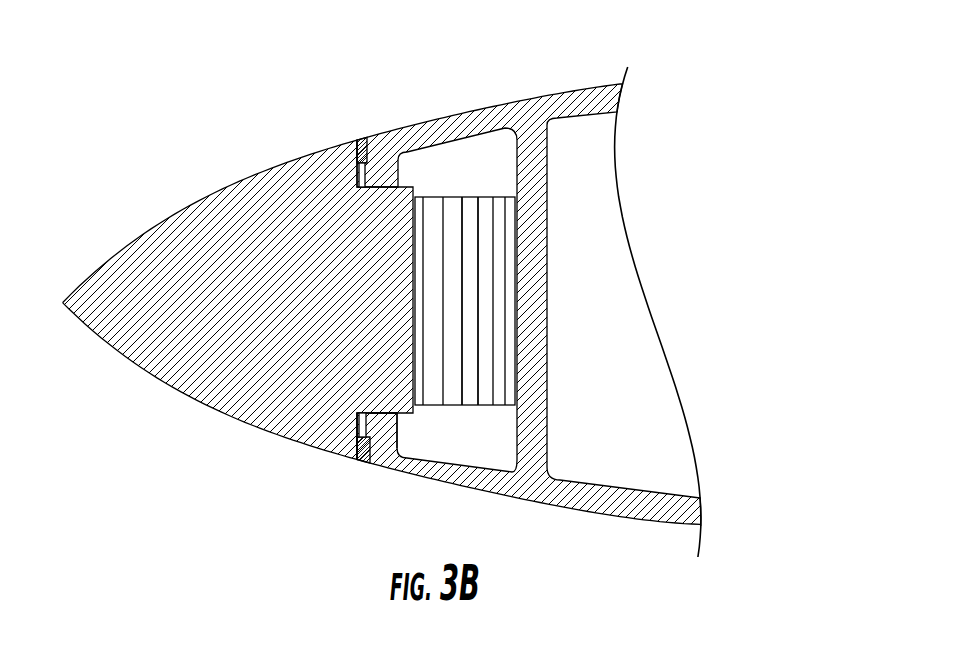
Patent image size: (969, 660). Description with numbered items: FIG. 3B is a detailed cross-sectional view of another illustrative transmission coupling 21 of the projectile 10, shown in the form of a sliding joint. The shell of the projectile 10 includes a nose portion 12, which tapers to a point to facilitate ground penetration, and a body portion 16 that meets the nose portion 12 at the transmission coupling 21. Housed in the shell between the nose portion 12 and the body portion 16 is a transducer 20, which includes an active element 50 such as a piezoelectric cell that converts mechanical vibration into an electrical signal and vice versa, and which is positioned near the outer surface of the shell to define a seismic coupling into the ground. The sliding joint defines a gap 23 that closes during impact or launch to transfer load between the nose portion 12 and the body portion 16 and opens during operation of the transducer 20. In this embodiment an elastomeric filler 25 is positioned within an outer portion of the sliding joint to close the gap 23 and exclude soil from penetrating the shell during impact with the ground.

The projectile 10 is at (382, 294).
The nose portion 12 is at (160, 255).
The body portion 16 is at (588, 107).
The transducer 20 is at (468, 237).
The transmission coupling 21 is at (363, 487).
The gap 23 is at (355, 428).
The elastomeric filler 25 is at (361, 138).
The active element 50 is at (486, 205).